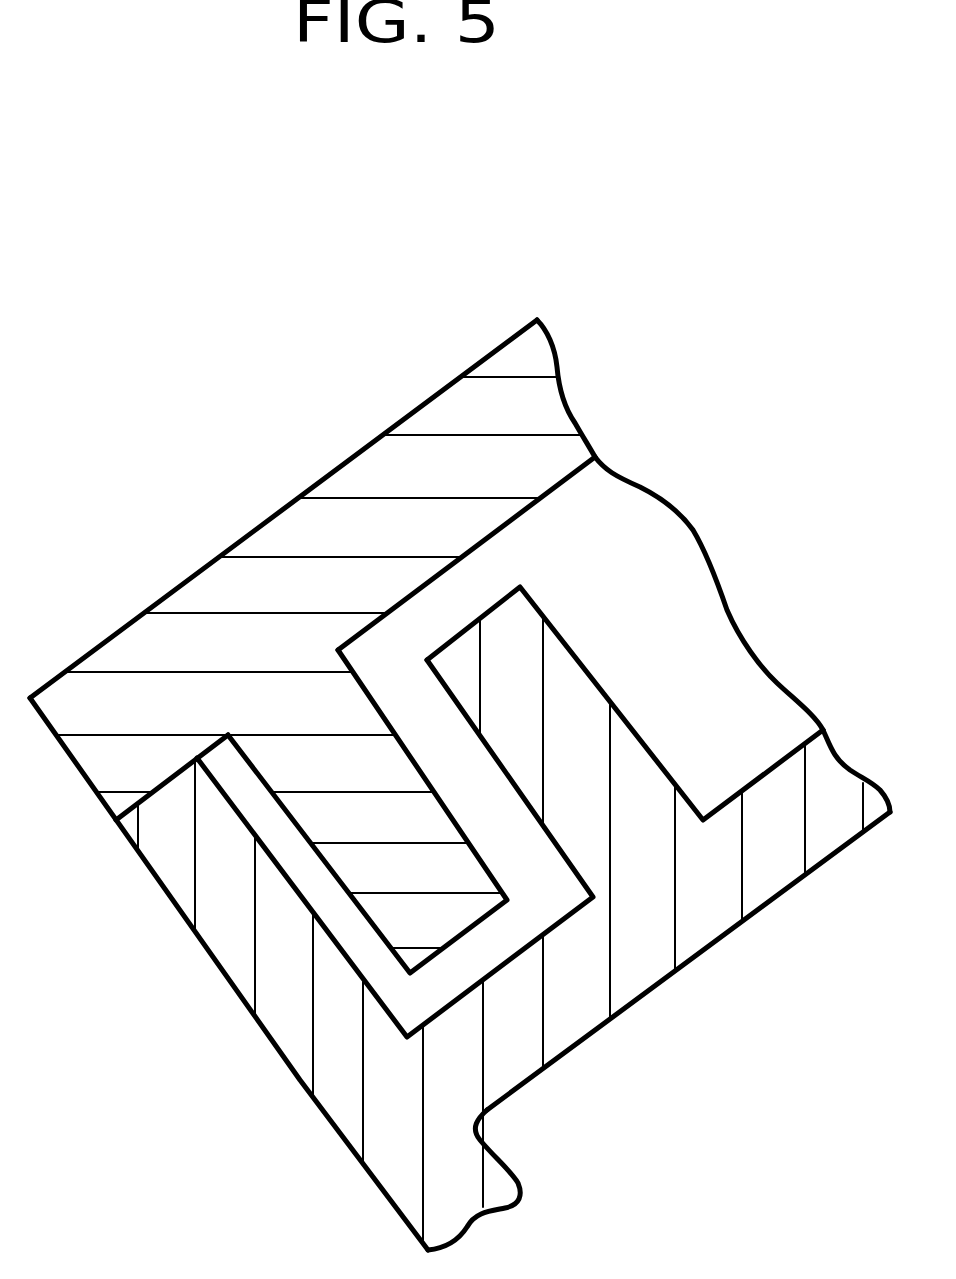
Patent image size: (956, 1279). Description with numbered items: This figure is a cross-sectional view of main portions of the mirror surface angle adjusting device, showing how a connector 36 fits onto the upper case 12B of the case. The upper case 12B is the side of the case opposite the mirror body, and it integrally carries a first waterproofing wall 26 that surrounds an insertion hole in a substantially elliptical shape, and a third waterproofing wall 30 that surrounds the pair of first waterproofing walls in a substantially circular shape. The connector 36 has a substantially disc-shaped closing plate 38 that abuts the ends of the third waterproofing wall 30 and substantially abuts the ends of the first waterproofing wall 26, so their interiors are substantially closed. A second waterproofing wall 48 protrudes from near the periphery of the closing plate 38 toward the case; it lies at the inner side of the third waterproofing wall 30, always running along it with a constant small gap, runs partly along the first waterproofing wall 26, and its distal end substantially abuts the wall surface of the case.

The upper case 12B is at (290, 1062).
The first waterproofing wall 26 is at (585, 660).
The third waterproofing wall 30 is at (174, 901).
The connector 36 is at (430, 393).
The closing plate 38 is at (318, 486).
The second waterproofing wall 48 is at (363, 680).